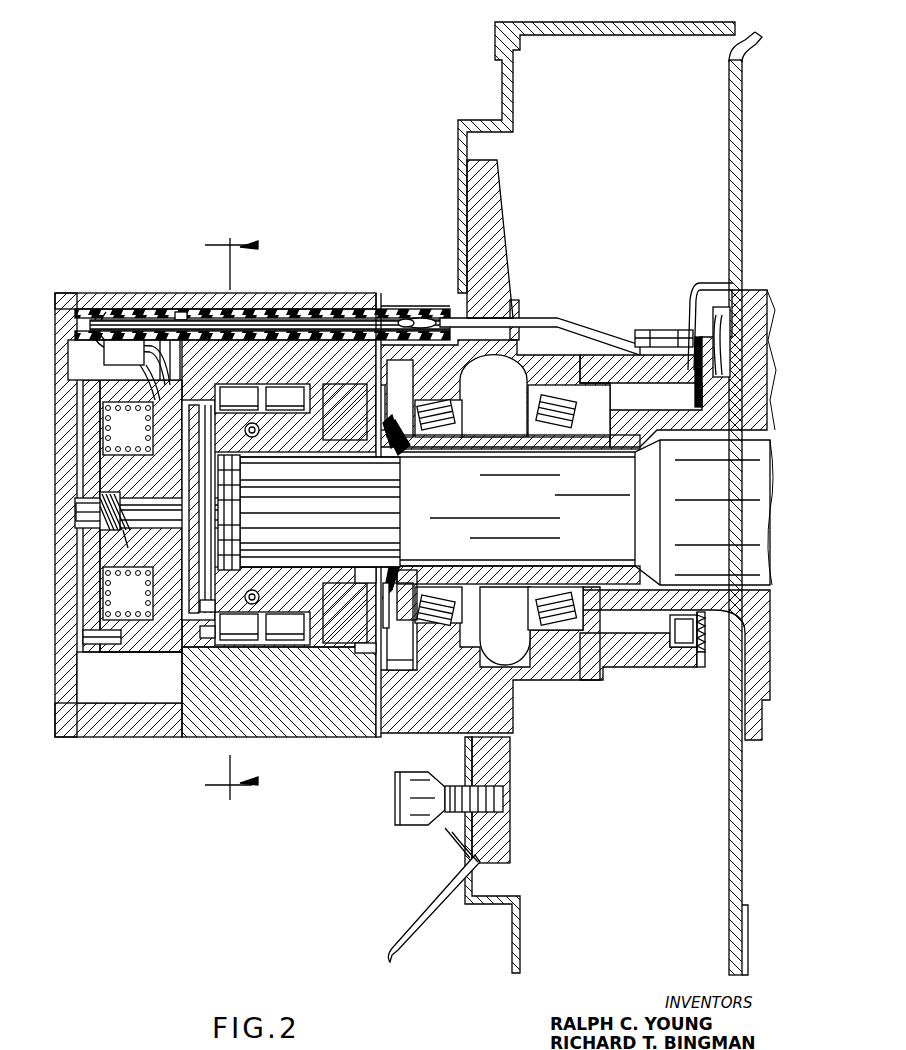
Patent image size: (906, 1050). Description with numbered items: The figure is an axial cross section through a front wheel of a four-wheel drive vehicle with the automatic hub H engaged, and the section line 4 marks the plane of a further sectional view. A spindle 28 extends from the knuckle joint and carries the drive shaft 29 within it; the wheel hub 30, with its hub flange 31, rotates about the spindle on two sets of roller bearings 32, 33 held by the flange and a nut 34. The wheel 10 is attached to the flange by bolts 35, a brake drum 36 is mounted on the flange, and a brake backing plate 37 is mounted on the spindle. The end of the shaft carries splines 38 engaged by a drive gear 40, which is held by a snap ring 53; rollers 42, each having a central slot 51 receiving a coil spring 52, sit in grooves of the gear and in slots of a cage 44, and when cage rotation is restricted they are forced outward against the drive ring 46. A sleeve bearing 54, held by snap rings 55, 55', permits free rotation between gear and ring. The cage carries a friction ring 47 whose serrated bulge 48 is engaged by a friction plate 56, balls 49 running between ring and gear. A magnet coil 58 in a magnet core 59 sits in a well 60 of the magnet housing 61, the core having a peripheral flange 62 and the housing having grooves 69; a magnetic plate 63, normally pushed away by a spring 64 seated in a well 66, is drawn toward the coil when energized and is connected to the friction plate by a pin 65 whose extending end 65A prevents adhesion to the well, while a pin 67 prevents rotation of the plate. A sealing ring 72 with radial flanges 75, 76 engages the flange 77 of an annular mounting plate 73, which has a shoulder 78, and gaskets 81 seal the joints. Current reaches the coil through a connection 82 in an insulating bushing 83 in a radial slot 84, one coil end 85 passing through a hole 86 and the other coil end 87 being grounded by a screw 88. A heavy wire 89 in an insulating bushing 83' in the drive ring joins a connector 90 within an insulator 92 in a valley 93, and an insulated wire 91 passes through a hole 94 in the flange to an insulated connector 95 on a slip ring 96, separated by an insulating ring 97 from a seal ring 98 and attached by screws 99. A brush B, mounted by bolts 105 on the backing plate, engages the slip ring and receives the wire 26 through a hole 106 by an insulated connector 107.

The section line 4- 4 is at (231, 514).
The automatic hub H is at (70, 290).
The wheel 10 is at (400, 932).
The wire 26 is at (745, 290).
The spindle 28 is at (558, 575).
The drive shaft 29 is at (519, 498).
The wheel hub 30 is at (525, 378).
The hub flange 31 is at (495, 205).
The roller bearing 32 is at (574, 405).
The roller bearing 33 is at (452, 416).
The nut 34 is at (405, 575).
The bolt 35 is at (490, 798).
The brake drum 36 is at (460, 160).
The brake backing plate 37 is at (731, 138).
The splines 38 is at (400, 503).
The drive gear 40 is at (274, 445).
The roller 42 is at (262, 516).
The cage 44 is at (312, 640).
The drive ring 46 is at (270, 735).
The friction ring 47 is at (198, 502).
The bulge 48 is at (198, 506).
The ball 49 is at (242, 511).
The central slot 51 is at (285, 625).
The coil spring 52 is at (262, 398).
The snap ring 53 is at (250, 560).
The sleeve bearing 54 is at (345, 513).
The snap ring 55 is at (358, 576).
The snap ring 55' is at (352, 657).
The friction plate 56 is at (198, 613).
The magnet coil 58 is at (118, 436).
The magnet core 59 is at (147, 553).
The well 60 is at (76, 466).
The magnet housing 61 is at (118, 725).
The peripheral flange 62 is at (170, 654).
The magnetic plate 63 is at (92, 580).
The spring 64 is at (115, 494).
The pin 65 is at (138, 519).
The extending end of pin 65A is at (80, 512).
The well 66 is at (120, 548).
The pin 67 is at (83, 634).
The groove 69 is at (160, 702).
The sealing ring 72 is at (398, 452).
The annular mounting plate 73 is at (388, 370).
The radial flange 75 is at (377, 608).
The radial flange 76 is at (392, 423).
The flange 77 is at (376, 407).
The shoulder 78 is at (388, 658).
The gasket 81 is at (182, 737).
The connection 82 is at (150, 309).
The insulating bushing 83 is at (130, 298).
The insulating bushing 83' is at (317, 298).
The radial slot 84 is at (80, 370).
The coil end 85 is at (94, 335).
The hole 86 is at (124, 352).
The coil end 87 is at (162, 398).
The screw 88 is at (166, 360).
The heavy wire 89 is at (250, 321).
The connector 90 is at (420, 318).
The insulated wire 91 is at (588, 333).
The insulator 92 is at (380, 305).
The valley 93 is at (405, 305).
The hole 94 is at (516, 310).
The insulated connector 95 is at (657, 330).
The slip ring 96 is at (704, 664).
The insulating ring 97 is at (697, 664).
The seal ring 98 is at (676, 626).
The screw 99 is at (705, 628).
The bolt 105 is at (705, 380).
The hole 106 is at (725, 282).
The insulated connector 107 is at (713, 330).
The brush B is at (708, 300).